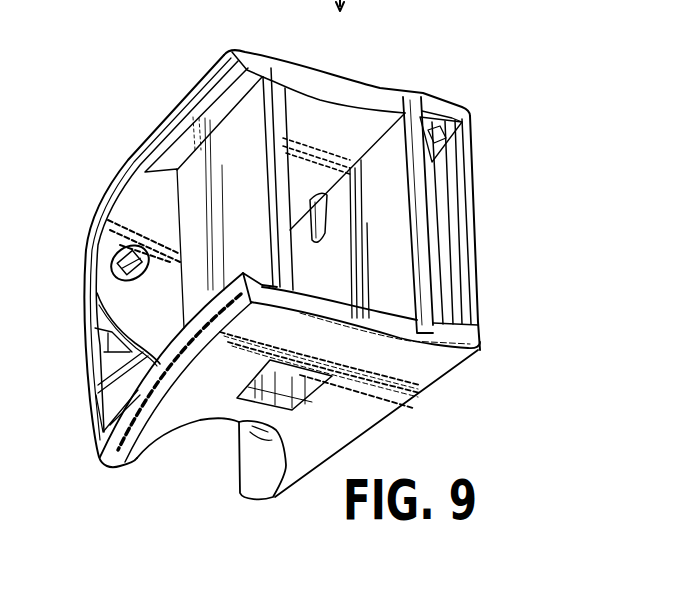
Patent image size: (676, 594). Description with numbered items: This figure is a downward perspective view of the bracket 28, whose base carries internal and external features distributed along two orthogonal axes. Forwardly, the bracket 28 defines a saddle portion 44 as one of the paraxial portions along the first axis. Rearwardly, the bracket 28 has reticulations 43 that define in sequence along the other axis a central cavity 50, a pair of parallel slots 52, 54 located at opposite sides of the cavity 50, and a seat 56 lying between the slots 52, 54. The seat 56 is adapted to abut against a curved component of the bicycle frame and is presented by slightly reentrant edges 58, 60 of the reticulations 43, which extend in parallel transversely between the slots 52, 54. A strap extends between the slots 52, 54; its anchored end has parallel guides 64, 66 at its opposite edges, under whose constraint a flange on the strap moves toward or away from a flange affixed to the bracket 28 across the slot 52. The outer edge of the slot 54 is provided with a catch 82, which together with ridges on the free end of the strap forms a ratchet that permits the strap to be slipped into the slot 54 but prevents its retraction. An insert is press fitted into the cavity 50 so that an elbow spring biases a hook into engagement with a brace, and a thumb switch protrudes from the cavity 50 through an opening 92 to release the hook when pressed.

The bracket 28 is at (127, 158).
The reticulations 43 is at (362, 112).
The saddle portion 44 is at (250, 465).
The central cavity 50 is at (401, 227).
The slot 52 is at (242, 124).
The slot 54 is at (422, 95).
The seat 56 is at (368, 78).
The reentrant edge 58 is at (320, 90).
The reentrant edge 60 is at (362, 327).
The guide 64 is at (187, 112).
The guide 66 is at (204, 322).
The catch 82 is at (443, 222).
The opening 92 is at (297, 408).